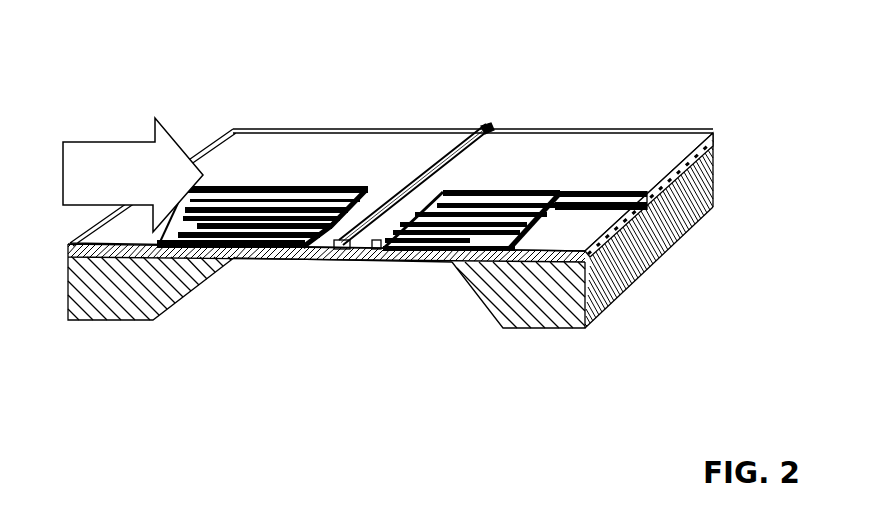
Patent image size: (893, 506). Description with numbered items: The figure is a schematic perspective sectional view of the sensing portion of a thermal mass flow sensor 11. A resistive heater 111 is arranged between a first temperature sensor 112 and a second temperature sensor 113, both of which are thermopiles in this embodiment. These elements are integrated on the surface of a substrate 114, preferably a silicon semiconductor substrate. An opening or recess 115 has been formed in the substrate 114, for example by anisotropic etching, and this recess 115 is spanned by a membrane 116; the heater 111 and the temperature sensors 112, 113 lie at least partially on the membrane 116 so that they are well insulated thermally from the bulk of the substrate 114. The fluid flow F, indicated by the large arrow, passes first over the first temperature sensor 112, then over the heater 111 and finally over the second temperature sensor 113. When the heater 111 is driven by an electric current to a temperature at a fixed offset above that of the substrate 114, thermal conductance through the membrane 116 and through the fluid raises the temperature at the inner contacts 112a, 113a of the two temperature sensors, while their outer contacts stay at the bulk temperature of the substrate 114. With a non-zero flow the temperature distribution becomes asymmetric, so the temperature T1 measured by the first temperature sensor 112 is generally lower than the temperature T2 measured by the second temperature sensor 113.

The thermal mass flow sensor 11 is at (518, 104).
The resistive heater 111 is at (422, 176).
The first temperature sensor 112 is at (235, 258).
The inner contact of first temperature sensor 112a is at (349, 198).
The second temperature sensor 113 is at (468, 280).
The inner contact of second temperature sensor 113a is at (443, 190).
The substrate 114 is at (130, 300).
The recess 115 is at (296, 332).
The membrane 116 is at (370, 260).
The fluid flow F is at (108, 141).
The temperature measured by first temperature sensor T1 is at (368, 168).
The temperature measured by second temperature sensor T2 is at (477, 174).